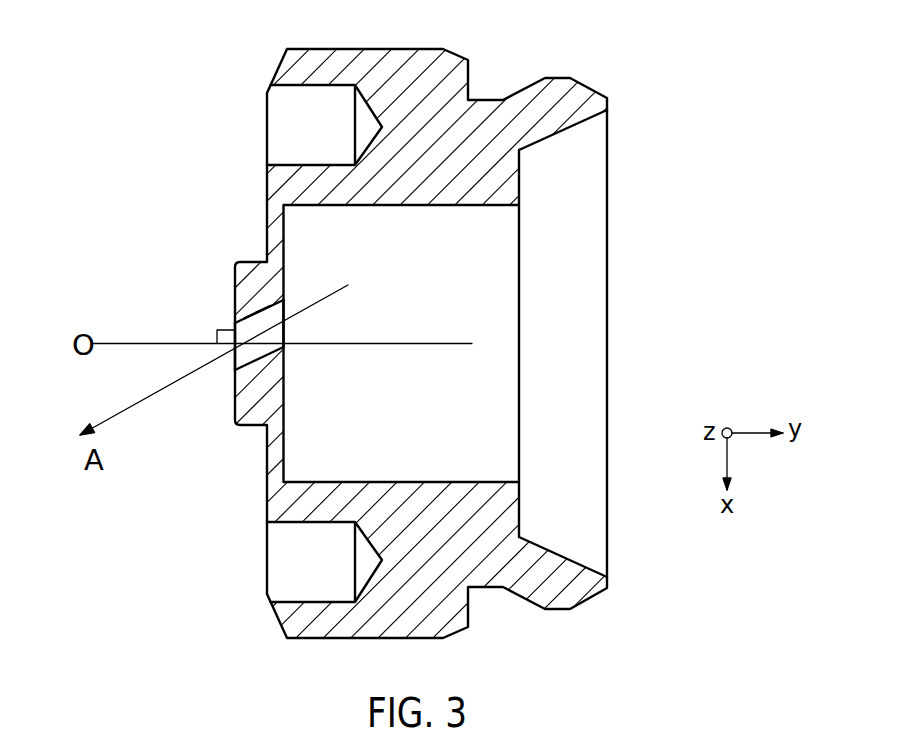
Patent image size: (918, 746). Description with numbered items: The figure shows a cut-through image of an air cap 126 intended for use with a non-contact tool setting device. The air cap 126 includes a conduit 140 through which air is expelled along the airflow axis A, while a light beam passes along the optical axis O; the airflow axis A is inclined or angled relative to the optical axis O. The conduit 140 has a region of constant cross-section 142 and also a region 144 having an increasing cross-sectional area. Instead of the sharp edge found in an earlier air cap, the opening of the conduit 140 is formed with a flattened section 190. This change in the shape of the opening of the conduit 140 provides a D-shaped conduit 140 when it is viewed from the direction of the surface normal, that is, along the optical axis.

The air cap 126 is at (598, 75).
The conduit 140 is at (257, 327).
The region of constant cross-section 142 is at (233, 353).
The region having an increasing cross-sectional area 144 is at (287, 310).
The flattened section 190 is at (284, 352).